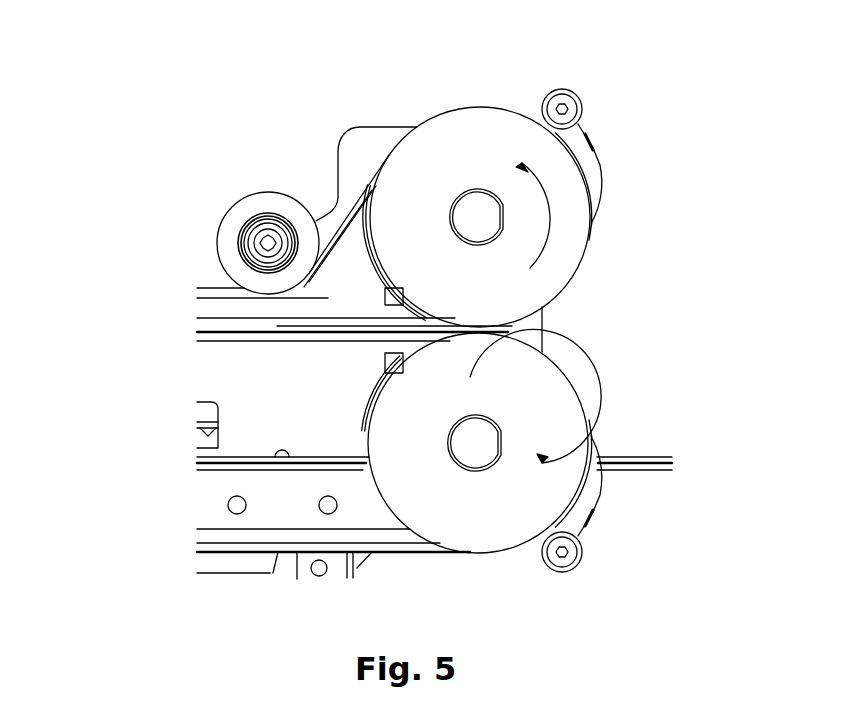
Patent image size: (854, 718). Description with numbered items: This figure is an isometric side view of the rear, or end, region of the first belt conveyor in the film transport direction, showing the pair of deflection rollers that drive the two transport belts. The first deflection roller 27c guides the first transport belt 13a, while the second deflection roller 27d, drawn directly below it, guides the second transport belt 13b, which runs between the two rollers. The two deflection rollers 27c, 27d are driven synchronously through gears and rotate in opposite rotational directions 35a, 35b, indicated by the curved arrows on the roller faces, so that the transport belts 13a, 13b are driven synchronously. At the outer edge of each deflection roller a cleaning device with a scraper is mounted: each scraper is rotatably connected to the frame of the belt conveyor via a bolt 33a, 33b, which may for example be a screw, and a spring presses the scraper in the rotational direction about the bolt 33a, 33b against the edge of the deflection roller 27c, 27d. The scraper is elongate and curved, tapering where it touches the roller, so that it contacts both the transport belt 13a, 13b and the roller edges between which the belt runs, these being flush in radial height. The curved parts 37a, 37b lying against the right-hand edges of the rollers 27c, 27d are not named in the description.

The first transport belt 13a is at (208, 292).
The second transport belt 13b is at (298, 340).
The first deflection roller 27c is at (455, 137).
The second deflection roller 27d is at (481, 552).
The bolt 33a is at (569, 100).
The bolt 33b is at (572, 552).
The rotational direction 35a is at (548, 232).
The rotational direction 35b is at (552, 413).
The upper guide bracket 37a is at (590, 168).
The lower guide bracket 37b is at (596, 490).